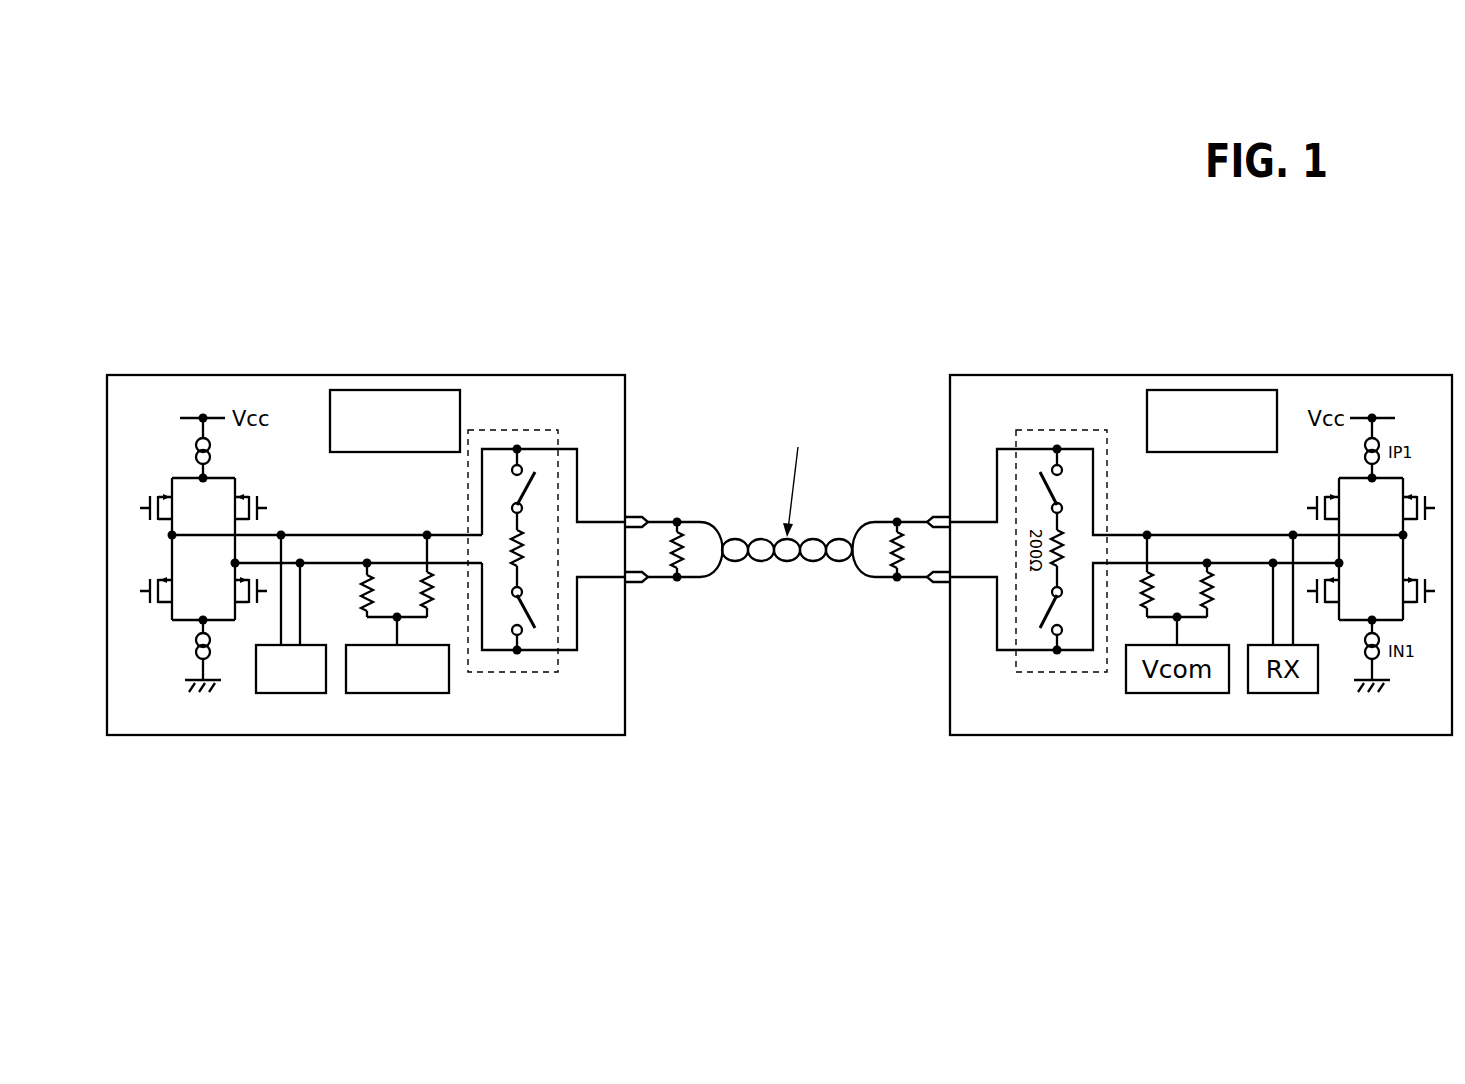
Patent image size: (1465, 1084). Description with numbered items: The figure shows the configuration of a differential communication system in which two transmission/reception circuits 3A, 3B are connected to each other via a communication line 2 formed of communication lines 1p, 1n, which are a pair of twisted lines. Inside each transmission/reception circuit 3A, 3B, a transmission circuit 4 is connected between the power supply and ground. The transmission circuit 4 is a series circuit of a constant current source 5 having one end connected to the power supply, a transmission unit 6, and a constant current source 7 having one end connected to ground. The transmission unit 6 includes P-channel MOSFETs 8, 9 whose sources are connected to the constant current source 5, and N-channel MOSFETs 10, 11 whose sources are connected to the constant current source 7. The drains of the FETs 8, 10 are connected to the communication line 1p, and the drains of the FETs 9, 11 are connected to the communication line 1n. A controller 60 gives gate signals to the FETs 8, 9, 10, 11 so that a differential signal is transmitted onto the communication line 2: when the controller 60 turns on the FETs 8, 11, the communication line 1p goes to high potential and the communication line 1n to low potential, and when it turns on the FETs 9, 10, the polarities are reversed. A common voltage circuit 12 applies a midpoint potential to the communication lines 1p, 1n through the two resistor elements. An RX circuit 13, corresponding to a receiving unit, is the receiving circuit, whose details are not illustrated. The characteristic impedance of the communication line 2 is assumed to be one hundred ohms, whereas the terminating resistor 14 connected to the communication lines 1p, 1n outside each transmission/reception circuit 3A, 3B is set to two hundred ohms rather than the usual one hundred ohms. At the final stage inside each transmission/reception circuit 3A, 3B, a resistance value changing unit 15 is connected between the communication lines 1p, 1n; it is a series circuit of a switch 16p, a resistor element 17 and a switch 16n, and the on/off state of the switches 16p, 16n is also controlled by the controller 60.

The communication line 1p is at (698, 517).
The communication line 1n is at (700, 580).
The communication line 2 is at (833, 508).
The transmission/reception circuit 3A is at (373, 375).
The transmission/reception circuit 3B is at (1205, 375).
The transmission circuit 4 is at (220, 501).
The constant current source 5 is at (213, 452).
The transmission unit 6 is at (178, 582).
The constant current source 7 is at (212, 648).
The P-channel MOSFET 8 is at (147, 502).
The P-channel MOSFET 9 is at (268, 500).
The N-channel MOSFET 10 is at (142, 604).
The N-channel MOSFET 11 is at (262, 604).
The Vcom circuit 12 is at (394, 693).
The RX circuit 13 is at (292, 693).
The terminating resistor 14 is at (697, 553).
The resistance value changing unit 15 is at (546, 535).
The switch 16p is at (538, 474).
The switch 16n is at (538, 626).
The resistor element 17 is at (558, 545).
The controller 60 is at (803, 421).